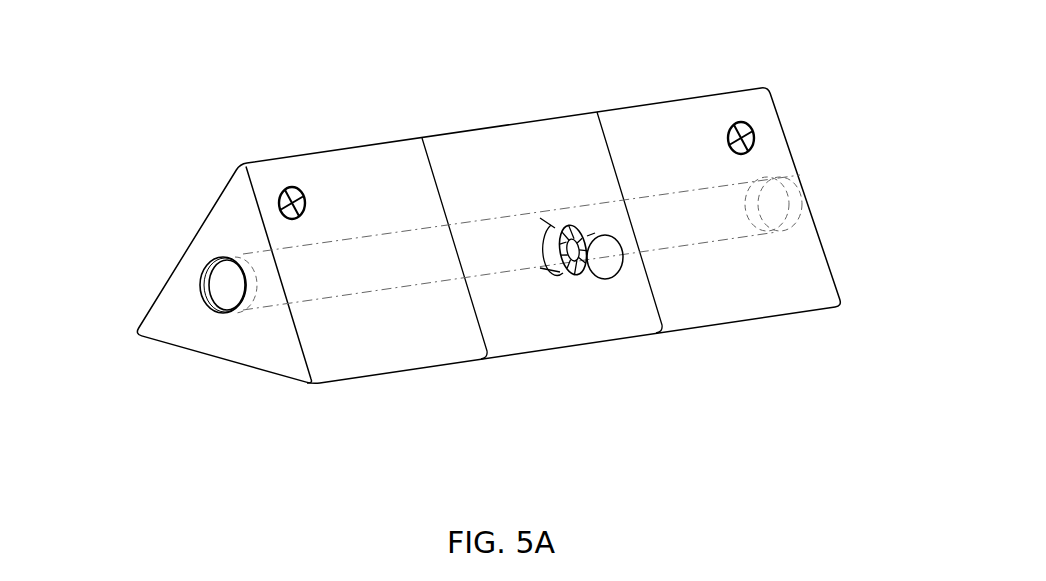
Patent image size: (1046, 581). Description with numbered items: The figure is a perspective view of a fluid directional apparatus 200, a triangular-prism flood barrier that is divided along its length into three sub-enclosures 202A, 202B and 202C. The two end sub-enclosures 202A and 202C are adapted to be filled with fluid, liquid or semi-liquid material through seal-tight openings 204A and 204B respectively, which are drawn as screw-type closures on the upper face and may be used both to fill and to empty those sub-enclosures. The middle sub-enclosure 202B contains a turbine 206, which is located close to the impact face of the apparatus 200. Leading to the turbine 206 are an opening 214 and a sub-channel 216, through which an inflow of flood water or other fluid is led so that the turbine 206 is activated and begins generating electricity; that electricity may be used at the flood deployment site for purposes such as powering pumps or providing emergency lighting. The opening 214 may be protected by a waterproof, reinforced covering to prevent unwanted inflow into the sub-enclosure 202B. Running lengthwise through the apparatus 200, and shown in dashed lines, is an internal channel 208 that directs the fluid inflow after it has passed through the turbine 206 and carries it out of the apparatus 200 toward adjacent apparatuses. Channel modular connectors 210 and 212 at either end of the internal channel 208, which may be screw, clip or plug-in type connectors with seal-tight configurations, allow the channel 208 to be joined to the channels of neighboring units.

The fluid directional apparatus 200 is at (750, 40).
The sub-enclosure 202A is at (373, 362).
The sub-enclosure 202B is at (558, 347).
The sub-enclosure 202C is at (733, 308).
The seal-tight opening 204A is at (299, 187).
The seal-tight opening 204B is at (753, 124).
The turbine 206 is at (547, 228).
The channel 208 is at (350, 246).
The channel modular connector 210 is at (200, 283).
The channel modular connector 212 is at (802, 188).
The opening 214 is at (603, 281).
The sub-channel 216 is at (595, 233).